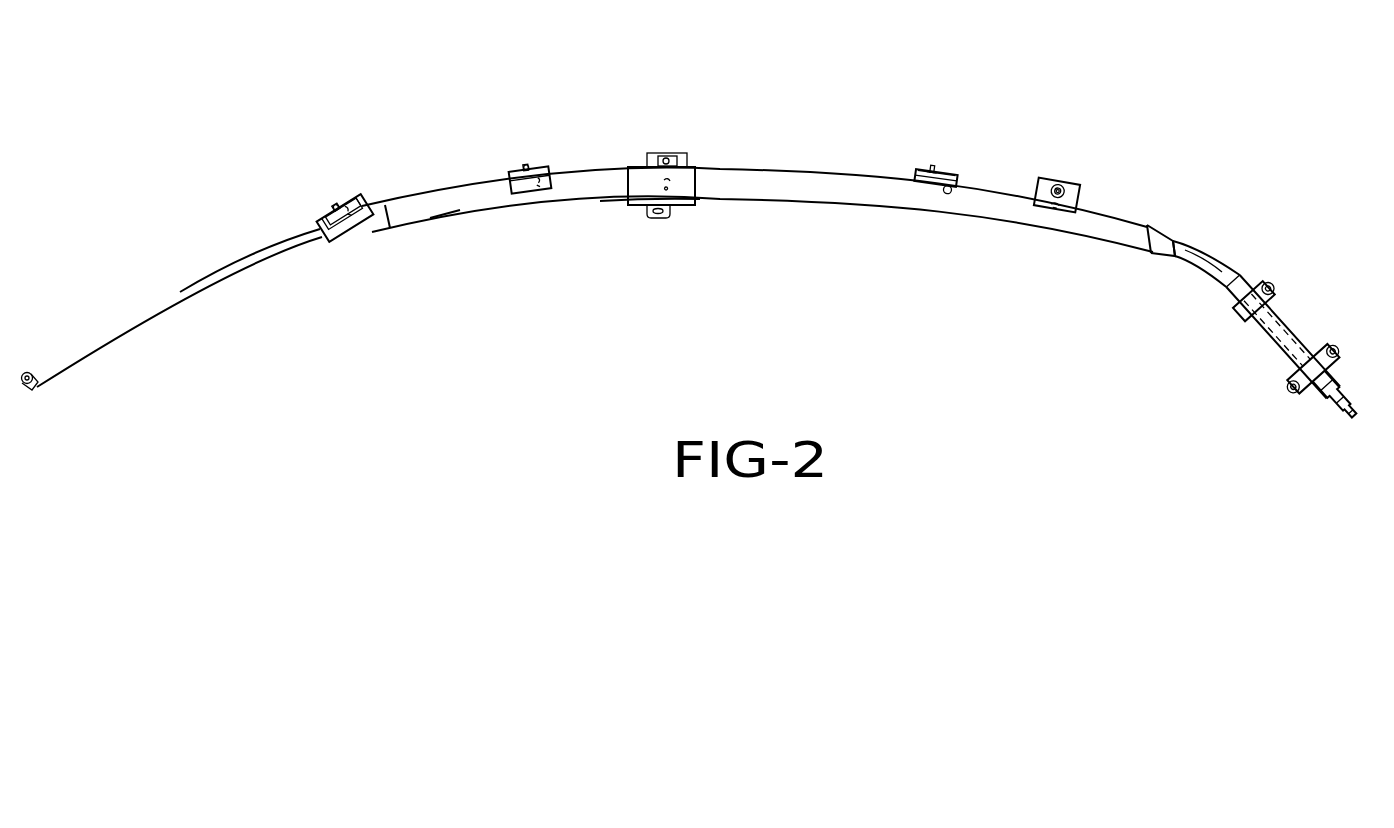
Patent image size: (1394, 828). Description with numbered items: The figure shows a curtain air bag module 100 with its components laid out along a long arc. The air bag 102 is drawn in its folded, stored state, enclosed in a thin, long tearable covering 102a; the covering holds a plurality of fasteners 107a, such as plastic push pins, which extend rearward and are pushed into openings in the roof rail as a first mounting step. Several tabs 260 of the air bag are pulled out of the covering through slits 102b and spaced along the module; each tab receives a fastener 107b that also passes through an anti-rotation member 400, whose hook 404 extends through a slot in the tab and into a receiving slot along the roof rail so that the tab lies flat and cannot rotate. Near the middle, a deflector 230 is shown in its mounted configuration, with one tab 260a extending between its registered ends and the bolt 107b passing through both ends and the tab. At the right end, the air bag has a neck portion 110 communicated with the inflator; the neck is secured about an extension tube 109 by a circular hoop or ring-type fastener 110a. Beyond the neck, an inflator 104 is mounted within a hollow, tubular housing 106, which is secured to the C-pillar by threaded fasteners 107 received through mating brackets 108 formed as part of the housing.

The air bag module 100 is at (457, 155).
The air bag 102 is at (427, 207).
The tearable covering 102a is at (442, 218).
The slit 102b is at (362, 223).
The inflator 104 is at (1290, 337).
The housing 106 is at (1270, 340).
The threaded fasteners 107 is at (1274, 287).
The fasteners 107a is at (350, 220).
The fasteners 107b is at (343, 195).
The brackets 108 is at (1268, 288).
The extension tube 109 is at (1202, 258).
The neck portion 110 is at (1157, 237).
The ring-type fastener 110a is at (1175, 253).
The deflector 230 is at (640, 165).
The tab 260 is at (328, 210).
The tab 260a is at (686, 160).
The anti-rotation member 400 is at (352, 197).
The hook 404 is at (345, 195).